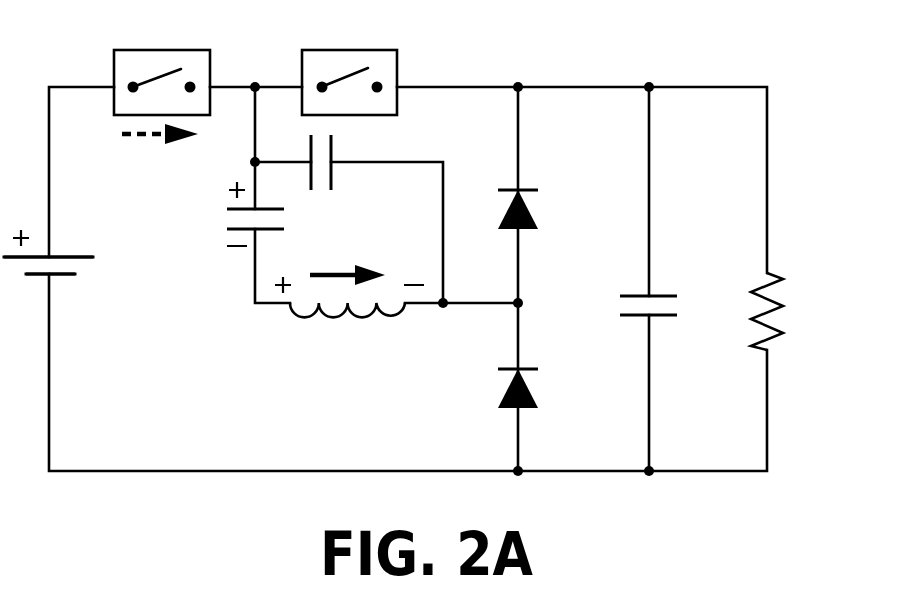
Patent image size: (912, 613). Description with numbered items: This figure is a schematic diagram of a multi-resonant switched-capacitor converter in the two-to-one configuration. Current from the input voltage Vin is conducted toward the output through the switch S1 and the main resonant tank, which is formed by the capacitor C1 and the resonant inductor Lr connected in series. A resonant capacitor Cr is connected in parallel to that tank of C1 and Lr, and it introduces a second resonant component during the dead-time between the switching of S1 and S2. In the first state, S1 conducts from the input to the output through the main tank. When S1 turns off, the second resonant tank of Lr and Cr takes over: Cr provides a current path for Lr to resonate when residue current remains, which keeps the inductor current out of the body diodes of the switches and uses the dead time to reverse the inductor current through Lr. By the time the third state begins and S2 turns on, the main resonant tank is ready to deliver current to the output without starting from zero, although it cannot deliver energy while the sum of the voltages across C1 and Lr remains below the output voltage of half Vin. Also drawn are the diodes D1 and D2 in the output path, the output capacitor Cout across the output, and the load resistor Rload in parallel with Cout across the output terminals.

The switch 1 S1 is at (162, 82).
The switch 2 S2 is at (349, 68).
The input voltage Vin is at (51, 272).
The capacitor C1 is at (234, 214).
The resonant capacitor Cr is at (339, 168).
The resonant inductor Lr is at (349, 310).
The first diode D1 is at (538, 209).
The second diode D2 is at (538, 388).
The output capacitor Cout is at (662, 325).
The load resistor Rload is at (796, 324).